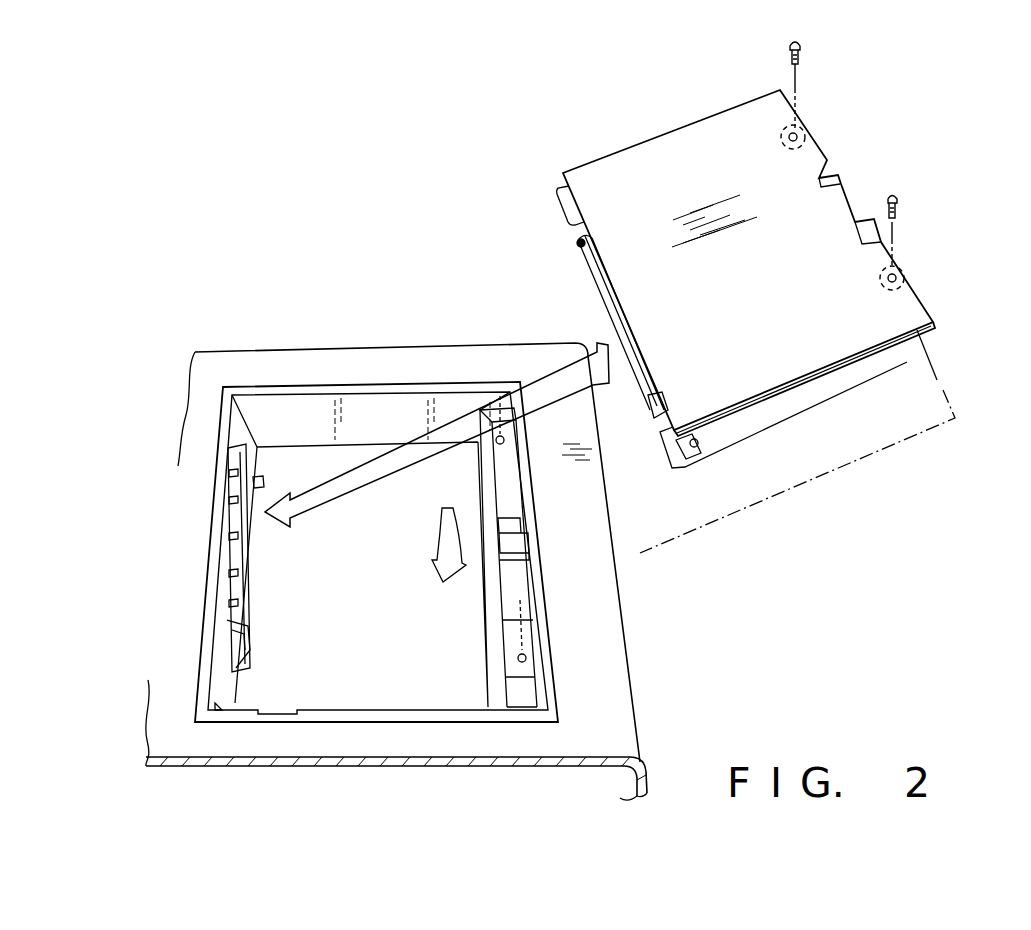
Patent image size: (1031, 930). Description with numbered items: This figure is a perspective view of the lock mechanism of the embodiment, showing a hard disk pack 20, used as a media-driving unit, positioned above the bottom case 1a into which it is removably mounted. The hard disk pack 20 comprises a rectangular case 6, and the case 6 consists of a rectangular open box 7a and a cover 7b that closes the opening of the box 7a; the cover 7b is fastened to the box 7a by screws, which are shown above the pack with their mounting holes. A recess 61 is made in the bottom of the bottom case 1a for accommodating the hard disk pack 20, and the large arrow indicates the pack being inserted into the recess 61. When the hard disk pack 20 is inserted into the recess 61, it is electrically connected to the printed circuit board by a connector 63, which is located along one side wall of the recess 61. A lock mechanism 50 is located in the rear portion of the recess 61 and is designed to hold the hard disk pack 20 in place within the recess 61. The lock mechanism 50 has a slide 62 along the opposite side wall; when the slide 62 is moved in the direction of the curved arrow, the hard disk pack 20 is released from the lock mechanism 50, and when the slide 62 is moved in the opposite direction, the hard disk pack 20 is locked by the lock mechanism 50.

The bottom case 1a is at (620, 683).
The hard disk pack 20 is at (648, 142).
The rectangular case 6 is at (825, 437).
The rectangular open box 7a is at (905, 361).
The cover 7b is at (924, 328).
The lock mechanism 50 is at (473, 583).
The recess 61 is at (392, 702).
The slide 62 is at (520, 603).
The connector 63 is at (262, 590).